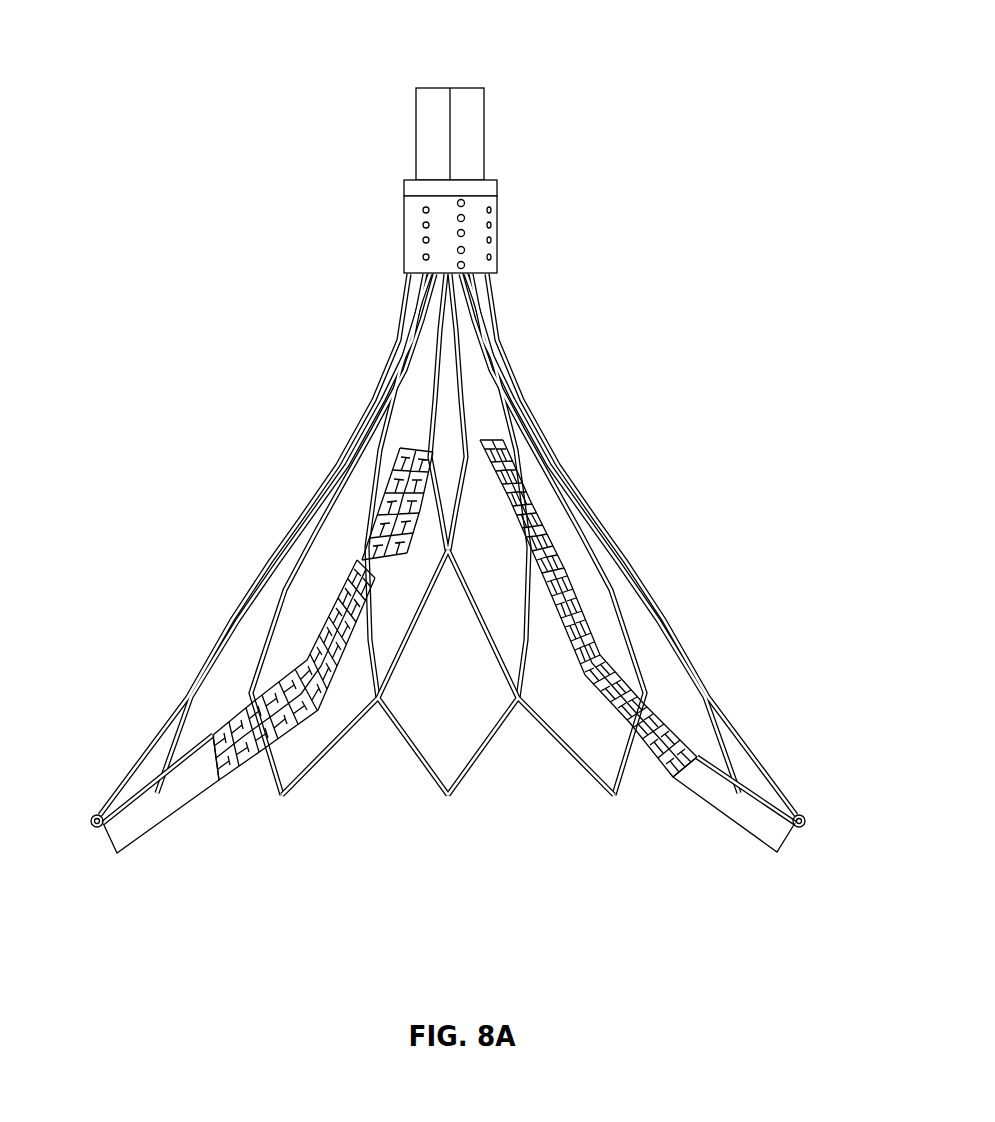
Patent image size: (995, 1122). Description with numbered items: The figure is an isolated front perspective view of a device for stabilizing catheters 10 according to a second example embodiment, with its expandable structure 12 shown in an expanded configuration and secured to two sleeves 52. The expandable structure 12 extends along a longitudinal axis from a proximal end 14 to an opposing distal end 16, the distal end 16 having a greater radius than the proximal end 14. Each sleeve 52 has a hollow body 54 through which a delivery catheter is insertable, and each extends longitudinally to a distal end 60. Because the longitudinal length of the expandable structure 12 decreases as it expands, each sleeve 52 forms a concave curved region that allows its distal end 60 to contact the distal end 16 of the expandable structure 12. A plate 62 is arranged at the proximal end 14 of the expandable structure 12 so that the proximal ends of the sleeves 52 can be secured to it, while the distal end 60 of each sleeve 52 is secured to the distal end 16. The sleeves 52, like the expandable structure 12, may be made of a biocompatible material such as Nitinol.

The device for stabilizing catheters 10 is at (447, 449).
The expandable structure 12 is at (524, 448).
The proximal end 14 is at (440, 197).
The distal end 16 is at (448, 798).
The sleeve 52 is at (231, 806).
The hollow body 54 is at (157, 822).
The distal end 60 is at (108, 841).
The plate 62 is at (404, 184).